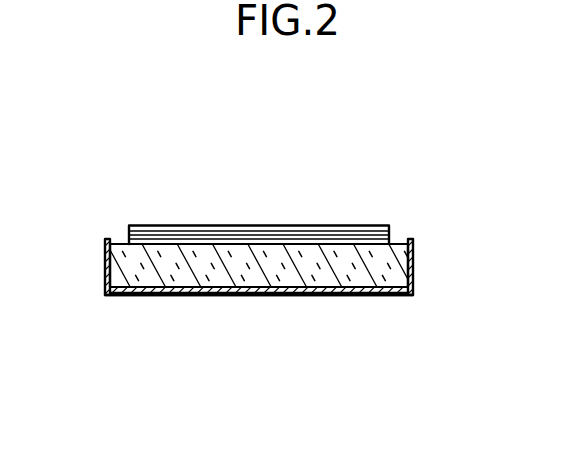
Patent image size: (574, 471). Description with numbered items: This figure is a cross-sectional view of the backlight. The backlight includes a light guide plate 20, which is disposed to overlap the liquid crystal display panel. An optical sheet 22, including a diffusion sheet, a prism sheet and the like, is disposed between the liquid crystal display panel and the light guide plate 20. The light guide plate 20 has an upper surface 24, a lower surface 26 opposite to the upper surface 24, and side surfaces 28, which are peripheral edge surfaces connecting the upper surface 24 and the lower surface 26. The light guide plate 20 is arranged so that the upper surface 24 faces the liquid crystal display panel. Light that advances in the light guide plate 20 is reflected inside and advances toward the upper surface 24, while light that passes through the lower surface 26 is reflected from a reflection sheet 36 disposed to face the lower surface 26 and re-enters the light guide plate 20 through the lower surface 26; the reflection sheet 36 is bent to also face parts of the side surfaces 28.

The light guide plate 20 is at (342, 282).
The optical sheet 22 is at (402, 229).
The upper surface 24 is at (234, 243).
The lower surface 26 is at (242, 293).
The side surfaces 28 is at (105, 263).
The reflection sheet 36 is at (298, 292).